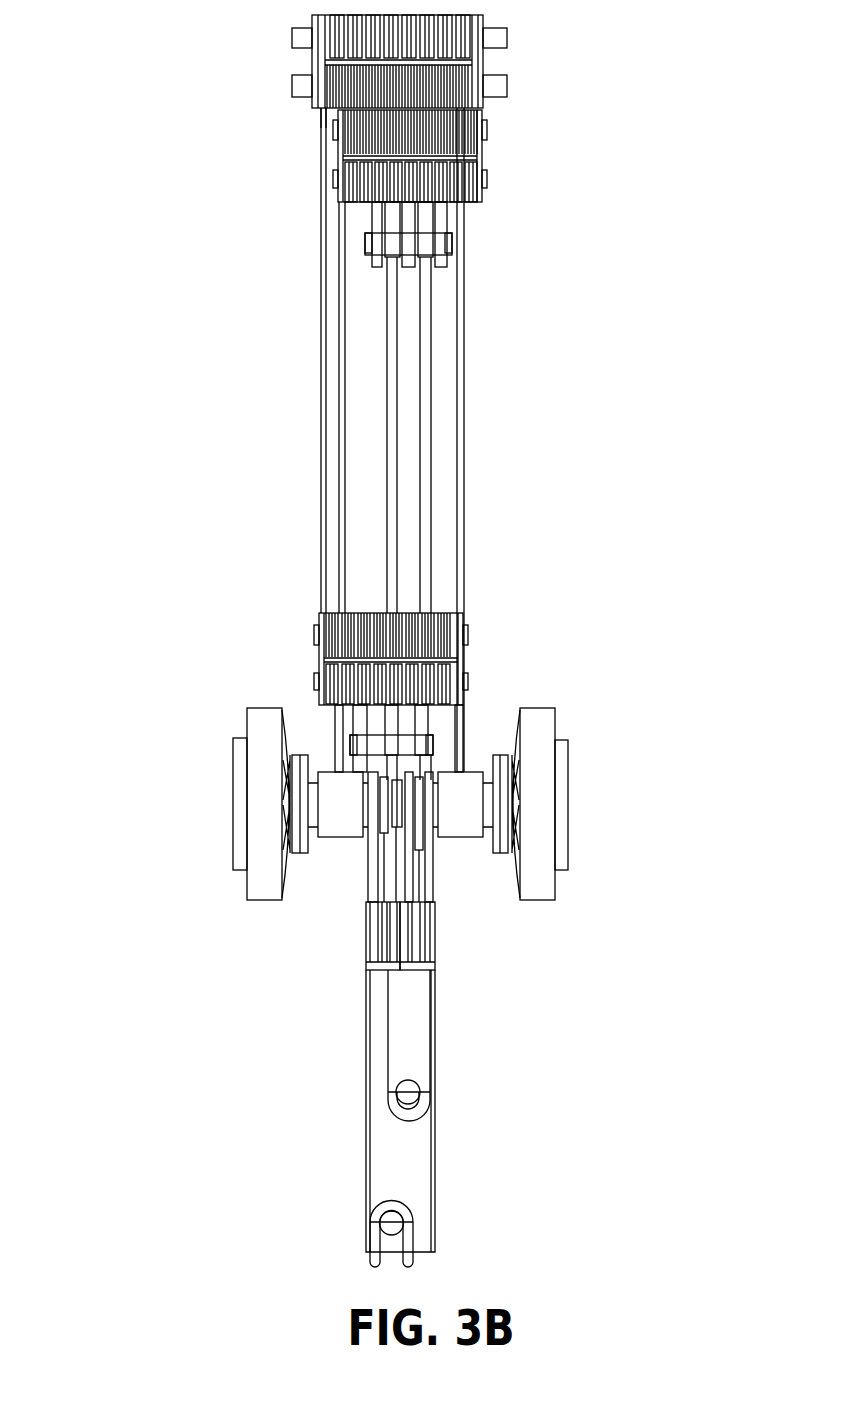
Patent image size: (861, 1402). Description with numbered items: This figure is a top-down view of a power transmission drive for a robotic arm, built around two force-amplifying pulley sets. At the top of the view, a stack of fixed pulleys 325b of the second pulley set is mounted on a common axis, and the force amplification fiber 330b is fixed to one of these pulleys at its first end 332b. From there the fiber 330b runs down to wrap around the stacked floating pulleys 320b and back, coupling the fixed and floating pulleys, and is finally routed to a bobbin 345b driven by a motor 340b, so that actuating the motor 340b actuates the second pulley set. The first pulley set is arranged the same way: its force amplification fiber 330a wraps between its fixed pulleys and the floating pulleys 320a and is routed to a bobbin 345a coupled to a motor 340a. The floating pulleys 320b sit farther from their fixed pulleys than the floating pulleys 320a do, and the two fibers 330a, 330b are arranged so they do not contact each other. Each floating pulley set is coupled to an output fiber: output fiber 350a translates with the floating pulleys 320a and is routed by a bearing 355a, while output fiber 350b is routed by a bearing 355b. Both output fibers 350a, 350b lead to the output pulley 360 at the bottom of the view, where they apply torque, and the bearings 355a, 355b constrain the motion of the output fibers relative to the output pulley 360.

The fixed pulley 325b is at (292, 40).
The first end 332b is at (322, 118).
The floating pulley 320a is at (480, 157).
The floating pulley 320b is at (463, 665).
The force amplification fiber 330a is at (338, 457).
The force amplification fiber 330b is at (465, 410).
The bobbin 345a is at (348, 795).
The bobbin 345b is at (466, 825).
The motor 340a is at (235, 812).
The motor 340b is at (570, 775).
The bearing 355a is at (437, 937).
The bearing 355b is at (367, 938).
The output fiber 350a is at (390, 1073).
The output fiber 350b is at (370, 1243).
The output pulley 360 is at (435, 1178).